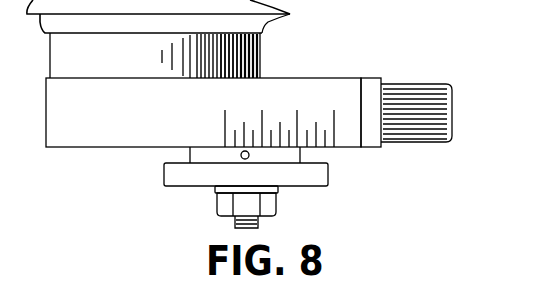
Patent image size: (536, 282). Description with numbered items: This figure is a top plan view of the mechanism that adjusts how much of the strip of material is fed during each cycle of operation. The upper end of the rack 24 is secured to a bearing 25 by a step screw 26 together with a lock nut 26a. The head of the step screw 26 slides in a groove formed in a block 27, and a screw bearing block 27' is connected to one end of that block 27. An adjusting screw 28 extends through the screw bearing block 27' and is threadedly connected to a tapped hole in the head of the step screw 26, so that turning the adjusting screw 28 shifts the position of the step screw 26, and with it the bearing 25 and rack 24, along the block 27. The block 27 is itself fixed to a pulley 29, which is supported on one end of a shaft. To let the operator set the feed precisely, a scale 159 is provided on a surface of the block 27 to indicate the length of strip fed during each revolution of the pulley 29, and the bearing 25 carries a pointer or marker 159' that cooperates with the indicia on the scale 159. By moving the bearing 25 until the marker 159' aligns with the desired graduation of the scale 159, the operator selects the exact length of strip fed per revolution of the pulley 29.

The rack 24 is at (178, 189).
The bearing 25 is at (302, 157).
The step screw 26 is at (235, 221).
The lock nut 26a is at (278, 212).
The block 27 is at (183, 90).
The screw bearing block 27' is at (387, 97).
The adjusting screw 28 is at (455, 101).
The pulley 29 is at (266, 25).
The scale 159 is at (247, 119).
The pointer or marker 159' is at (296, 181).